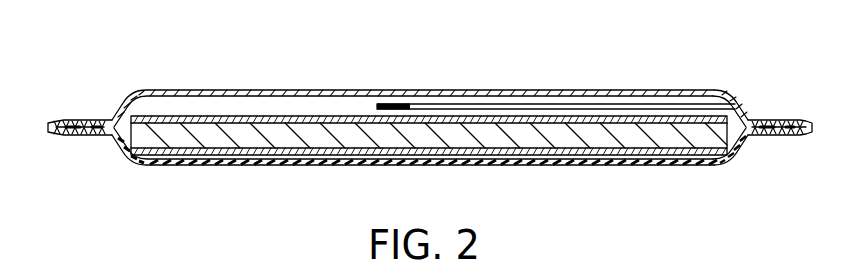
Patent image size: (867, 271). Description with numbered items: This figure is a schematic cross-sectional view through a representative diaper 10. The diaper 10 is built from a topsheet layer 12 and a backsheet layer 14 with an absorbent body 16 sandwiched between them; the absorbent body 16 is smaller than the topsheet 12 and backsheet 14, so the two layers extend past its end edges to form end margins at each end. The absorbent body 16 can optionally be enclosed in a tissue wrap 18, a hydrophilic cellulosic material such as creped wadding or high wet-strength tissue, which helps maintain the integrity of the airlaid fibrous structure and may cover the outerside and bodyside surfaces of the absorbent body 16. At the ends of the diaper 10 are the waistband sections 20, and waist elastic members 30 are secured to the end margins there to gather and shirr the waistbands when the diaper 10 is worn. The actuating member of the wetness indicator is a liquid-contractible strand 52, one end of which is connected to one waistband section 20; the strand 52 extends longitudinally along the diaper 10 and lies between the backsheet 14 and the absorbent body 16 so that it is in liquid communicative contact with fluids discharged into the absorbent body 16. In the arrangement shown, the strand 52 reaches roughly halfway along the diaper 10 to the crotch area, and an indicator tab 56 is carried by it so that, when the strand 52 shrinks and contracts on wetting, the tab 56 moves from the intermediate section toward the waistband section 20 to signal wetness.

The diaper 10 is at (150, 47).
The topsheet layer 12 is at (466, 167).
The backsheet layer 14 is at (718, 90).
The absorbent body 16 is at (271, 137).
The tissue wrap 18 is at (668, 155).
The waistband section 20 is at (760, 159).
The waist elastic member 30 is at (84, 118).
The liquid-contractible strand 52 is at (520, 104).
The indicator tab 56 is at (398, 104).